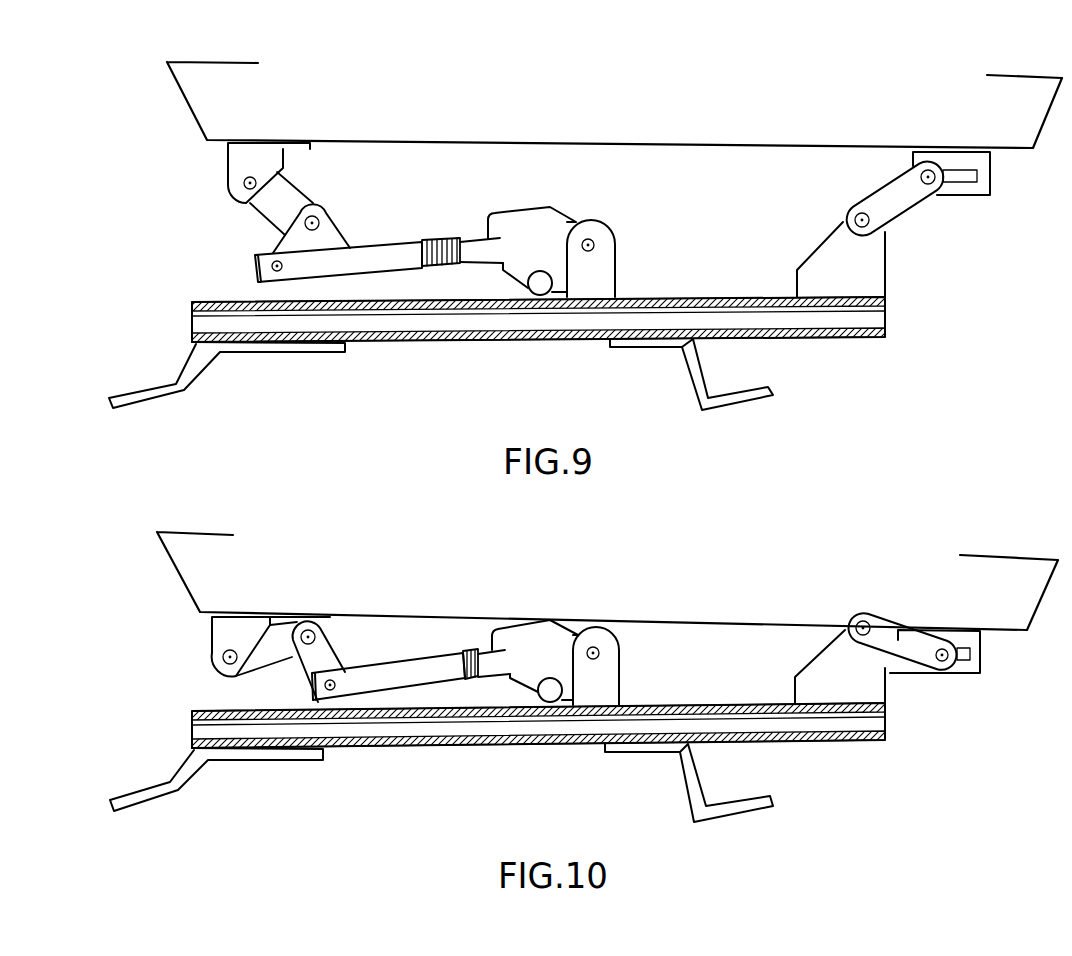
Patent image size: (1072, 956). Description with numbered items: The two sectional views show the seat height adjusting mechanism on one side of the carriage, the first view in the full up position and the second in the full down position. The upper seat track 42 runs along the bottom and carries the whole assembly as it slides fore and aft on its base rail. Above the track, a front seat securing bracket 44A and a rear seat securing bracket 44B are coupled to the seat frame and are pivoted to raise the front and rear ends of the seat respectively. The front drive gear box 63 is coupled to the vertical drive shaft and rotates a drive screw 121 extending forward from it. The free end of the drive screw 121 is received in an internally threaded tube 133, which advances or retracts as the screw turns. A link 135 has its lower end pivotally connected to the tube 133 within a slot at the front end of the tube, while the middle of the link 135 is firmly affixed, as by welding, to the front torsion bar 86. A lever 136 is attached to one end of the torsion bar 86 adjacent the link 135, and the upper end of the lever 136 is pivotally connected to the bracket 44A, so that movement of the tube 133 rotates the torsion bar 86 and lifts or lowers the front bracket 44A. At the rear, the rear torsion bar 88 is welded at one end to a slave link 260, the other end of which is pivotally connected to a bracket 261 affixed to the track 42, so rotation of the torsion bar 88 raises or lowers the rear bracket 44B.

In FIG. 9, the upper seat track 42 is at (538, 340).
In FIG. 10, the upper seat track 42 is at (557, 745).
In FIG. 9, the front seat securing bracket 44A is at (268, 140).
In FIG. 10, the front seat securing bracket 44A is at (250, 612).
In FIG. 9, the rear seat securing bracket 44B is at (967, 197).
In FIG. 10, the rear seat securing bracket 44B is at (967, 676).
In FIG. 9, the front drive gear box 63 is at (548, 251).
In FIG. 10, the front drive gear box 63 is at (548, 660).
In FIG. 9, the front torsion bar 86 is at (318, 222).
In FIG. 10, the front torsion bar 86 is at (313, 632).
In FIG. 9, the rear torsion bar 88 is at (926, 178).
In FIG. 10, the rear torsion bar 88 is at (863, 625).
In FIG. 9, the drive screw 121 is at (455, 265).
In FIG. 10, the drive screw 121 is at (485, 680).
In FIG. 9, the internally threaded tube 133 is at (372, 262).
In FIG. 10, the internally threaded tube 133 is at (410, 680).
In FIG. 9, the link 135 is at (285, 240).
In FIG. 10, the link 135 is at (308, 662).
In FIG. 9, the lever 136 is at (286, 197).
In FIG. 9, the slave link 260 is at (895, 228).
In FIG. 10, the slave link 260 is at (917, 673).
In FIG. 9, the bracket 261 is at (854, 277).
In FIG. 10, the bracket 261 is at (850, 692).